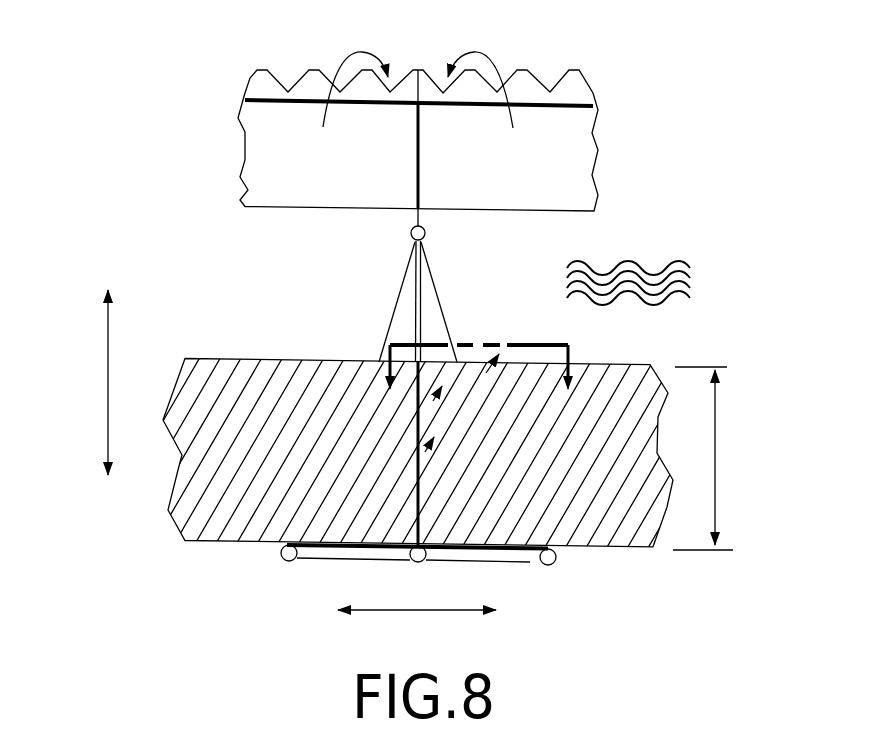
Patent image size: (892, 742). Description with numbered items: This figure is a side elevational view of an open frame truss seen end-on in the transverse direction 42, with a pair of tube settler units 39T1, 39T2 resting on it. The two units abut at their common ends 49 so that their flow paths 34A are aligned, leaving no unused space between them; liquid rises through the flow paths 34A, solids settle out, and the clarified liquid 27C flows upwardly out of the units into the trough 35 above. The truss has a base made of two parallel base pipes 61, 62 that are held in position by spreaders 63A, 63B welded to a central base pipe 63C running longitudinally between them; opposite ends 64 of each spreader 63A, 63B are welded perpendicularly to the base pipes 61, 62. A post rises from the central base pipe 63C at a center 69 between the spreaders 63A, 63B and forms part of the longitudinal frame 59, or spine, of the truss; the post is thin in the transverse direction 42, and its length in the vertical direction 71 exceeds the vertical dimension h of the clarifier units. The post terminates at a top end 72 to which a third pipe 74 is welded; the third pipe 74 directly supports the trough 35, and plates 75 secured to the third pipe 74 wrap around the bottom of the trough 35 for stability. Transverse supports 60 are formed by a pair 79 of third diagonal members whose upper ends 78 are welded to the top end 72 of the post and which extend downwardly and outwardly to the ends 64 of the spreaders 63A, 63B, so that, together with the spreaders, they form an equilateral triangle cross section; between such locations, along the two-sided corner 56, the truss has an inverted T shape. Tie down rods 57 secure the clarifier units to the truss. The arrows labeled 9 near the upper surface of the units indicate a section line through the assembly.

The clarified liquid 27C is at (475, 50).
The trough 35 is at (515, 211).
The plates 75 is at (415, 160).
The third pipe 74 is at (427, 232).
The top end 72 is at (412, 270).
The upper end 78 is at (400, 305).
The longitudinal frame 59 is at (425, 290).
The tie down rods 57 is at (459, 358).
The pair of third diagonal members 79 is at (442, 327).
The transverse supports 60 is at (377, 348).
The depth 9 is at (479, 383).
The tube settler unit 39T1 is at (237, 390).
The tube settler unit 39T2 is at (600, 378).
The two-sided corner 56 is at (406, 540).
The flow paths 34A is at (404, 455).
The vertical direction 71 is at (108, 380).
The vertical dimension h is at (708, 458).
The base pipe 62 is at (282, 547).
The opposite ends 64 is at (303, 561).
The central base pipe 63C is at (421, 562).
The spreader 63A is at (312, 560).
The spreader 63B is at (528, 562).
The center 69 is at (415, 565).
The base pipe 61 is at (557, 556).
The common ends 49 is at (420, 512).
The transverse direction 42 is at (422, 610).